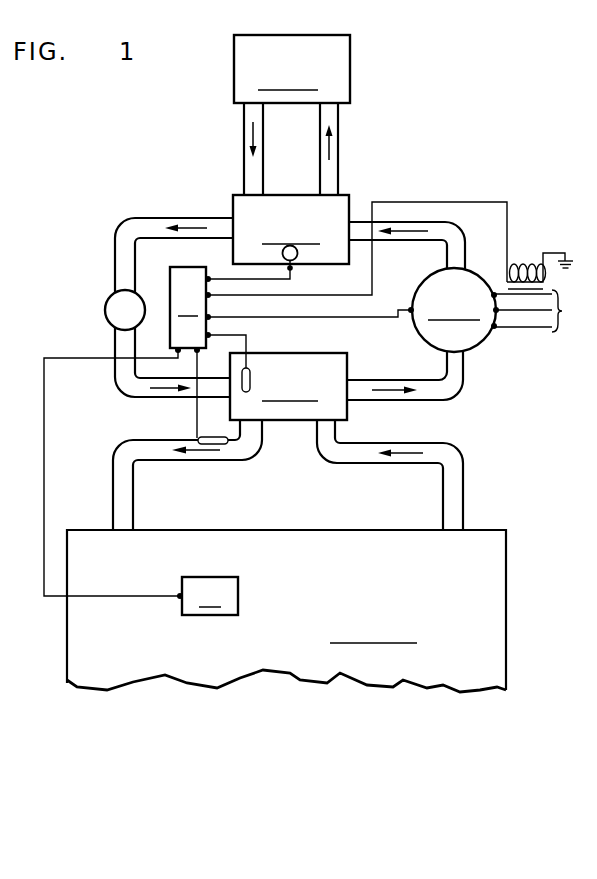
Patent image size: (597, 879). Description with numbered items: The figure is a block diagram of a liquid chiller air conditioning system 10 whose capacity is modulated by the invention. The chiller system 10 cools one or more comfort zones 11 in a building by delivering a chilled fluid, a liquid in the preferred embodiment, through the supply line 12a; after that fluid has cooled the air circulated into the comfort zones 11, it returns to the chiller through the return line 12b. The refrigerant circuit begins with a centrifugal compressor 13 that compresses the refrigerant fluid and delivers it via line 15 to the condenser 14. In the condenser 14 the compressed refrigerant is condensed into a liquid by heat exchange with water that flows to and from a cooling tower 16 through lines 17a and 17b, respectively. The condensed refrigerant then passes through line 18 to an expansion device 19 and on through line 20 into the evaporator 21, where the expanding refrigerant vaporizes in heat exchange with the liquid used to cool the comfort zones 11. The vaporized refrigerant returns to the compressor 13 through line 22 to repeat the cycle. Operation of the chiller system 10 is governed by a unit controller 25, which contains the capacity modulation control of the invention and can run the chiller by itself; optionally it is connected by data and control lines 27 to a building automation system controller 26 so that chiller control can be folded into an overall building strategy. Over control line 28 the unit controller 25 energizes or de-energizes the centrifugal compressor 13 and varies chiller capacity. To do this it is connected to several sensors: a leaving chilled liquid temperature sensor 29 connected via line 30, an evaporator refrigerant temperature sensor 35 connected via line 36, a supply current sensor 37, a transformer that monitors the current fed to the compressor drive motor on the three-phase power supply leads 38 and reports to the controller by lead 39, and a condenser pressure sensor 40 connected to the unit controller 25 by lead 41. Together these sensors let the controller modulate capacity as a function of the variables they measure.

The liquid chiller system 10 is at (478, 378).
The comfort zones 11 is at (286, 611).
The supply line 12a is at (133, 490).
The return line 12b is at (463, 498).
The centrifugal compressor 13 is at (485, 341).
The condenser 14 is at (353, 197).
The line 15 is at (454, 236).
The cooling tower 16 is at (351, 78).
The line 17a is at (338, 137).
The line 17b is at (244, 170).
The line 18 is at (115, 252).
The expansion device 19 is at (106, 307).
The line 20 is at (119, 392).
The evaporator 21 is at (295, 421).
The line 22 is at (443, 401).
The unit controller 25 is at (190, 310).
The building automation system controller 26 is at (210, 596).
The data and control lines 27 is at (44, 483).
The control line 28 is at (350, 318).
The leaving chilled liquid temperature sensor 29 is at (213, 427).
The line 30 is at (195, 429).
The evaporator refrigerant temperature sensor 35 is at (251, 380).
The line 36 is at (249, 342).
The supply current sensor 37 is at (545, 275).
The three-phase power supply leads 38 is at (539, 311).
The lead 39 is at (460, 202).
The condenser pressure sensor 40 is at (300, 262).
The lead 41 is at (231, 278).